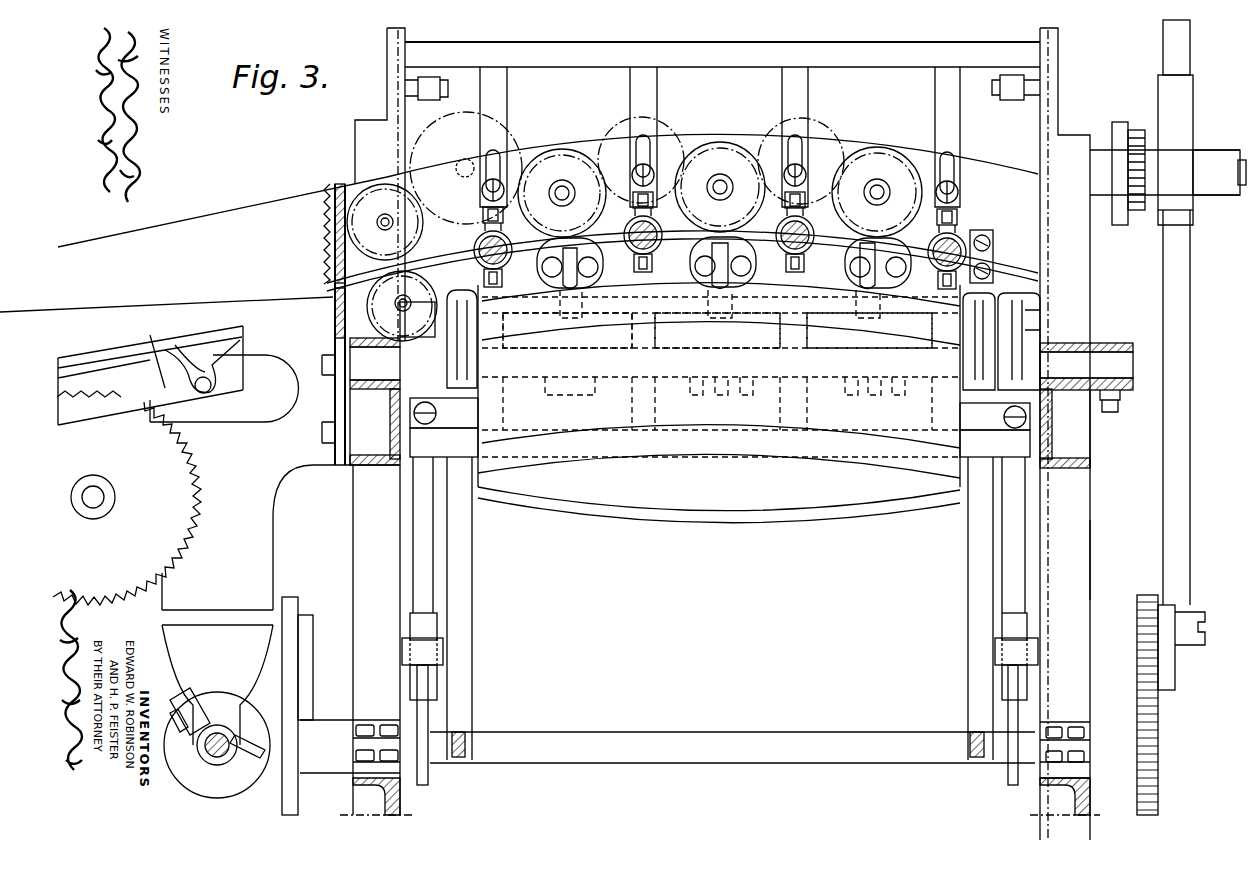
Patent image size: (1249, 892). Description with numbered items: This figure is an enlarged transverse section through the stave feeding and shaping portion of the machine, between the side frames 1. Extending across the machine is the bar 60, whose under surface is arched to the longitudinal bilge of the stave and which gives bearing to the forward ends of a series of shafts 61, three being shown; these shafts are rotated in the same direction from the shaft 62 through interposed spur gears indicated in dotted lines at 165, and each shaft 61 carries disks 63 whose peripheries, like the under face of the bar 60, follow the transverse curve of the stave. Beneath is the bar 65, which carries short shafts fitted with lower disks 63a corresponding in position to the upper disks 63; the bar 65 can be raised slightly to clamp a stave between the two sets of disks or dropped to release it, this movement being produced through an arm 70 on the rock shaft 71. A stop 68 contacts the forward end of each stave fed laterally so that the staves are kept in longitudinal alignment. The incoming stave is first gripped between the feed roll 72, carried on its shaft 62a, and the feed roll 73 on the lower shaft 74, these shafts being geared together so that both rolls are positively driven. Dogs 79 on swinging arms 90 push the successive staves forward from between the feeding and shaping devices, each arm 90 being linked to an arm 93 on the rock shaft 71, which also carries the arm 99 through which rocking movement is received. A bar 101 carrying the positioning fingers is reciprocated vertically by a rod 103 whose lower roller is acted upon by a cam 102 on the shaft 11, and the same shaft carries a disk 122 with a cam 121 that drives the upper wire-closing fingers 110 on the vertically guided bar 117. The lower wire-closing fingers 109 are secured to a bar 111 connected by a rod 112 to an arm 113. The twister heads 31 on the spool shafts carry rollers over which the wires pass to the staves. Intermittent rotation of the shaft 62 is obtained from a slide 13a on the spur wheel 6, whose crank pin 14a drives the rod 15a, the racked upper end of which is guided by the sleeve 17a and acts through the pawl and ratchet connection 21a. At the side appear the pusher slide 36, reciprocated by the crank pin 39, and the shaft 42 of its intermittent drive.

The side frames 1 is at (721, 579).
The spur wheel 6 is at (1137, 682).
The shaft 11 is at (670, 747).
The radially adjustable slide 13a is at (1175, 682).
The crank pin 14a is at (1195, 612).
The rod 15a is at (1186, 388).
The sleeve 17a is at (1193, 112).
The pawl and ratchet connection 21a is at (1135, 128).
The twister head 31 is at (945, 292).
The reciprocating slide 36 is at (202, 366).
The crank pin 39 is at (108, 412).
The shaft 42 is at (98, 505).
The bar 60 is at (712, 152).
The shafts 61 is at (876, 180).
The shaft 62 is at (460, 174).
The spool hub 62a is at (380, 222).
The disks 63 is at (720, 192).
The disks 63a is at (724, 262).
The bar 65 is at (682, 261).
The stop 68 is at (995, 256).
The arm 70 is at (425, 337).
The rock shaft 71 is at (741, 377).
The feed roll 72 is at (383, 214).
The feed roll 73 is at (402, 306).
The lower shaft 74 is at (395, 305).
The dogs 79 is at (690, 255).
The arms 90 is at (858, 335).
The arm 93 is at (470, 328).
The arm 99 is at (1123, 324).
The bar 101 is at (720, 414).
The cam 102 is at (424, 785).
The rod 103 is at (424, 558).
The lower fingers 109 is at (524, 279).
The upper fingers 110 is at (720, 137).
The bar 111 is at (720, 442).
The rod 112 is at (465, 636).
The arm 113 is at (466, 748).
The bar 117 is at (722, 54).
The cam 121 is at (313, 682).
The disk 122 is at (282, 682).
The spur gears 165 is at (893, 150).